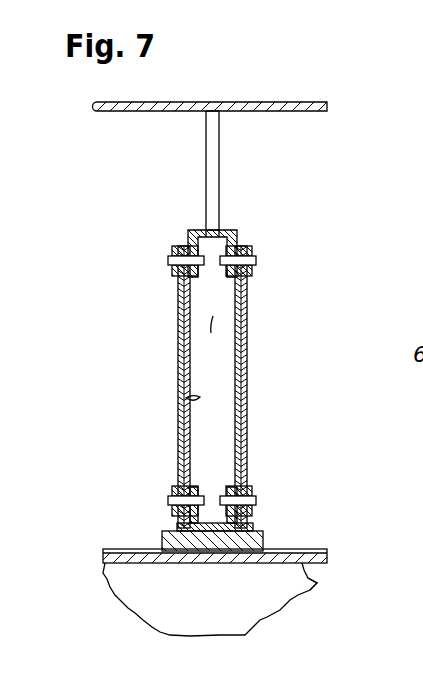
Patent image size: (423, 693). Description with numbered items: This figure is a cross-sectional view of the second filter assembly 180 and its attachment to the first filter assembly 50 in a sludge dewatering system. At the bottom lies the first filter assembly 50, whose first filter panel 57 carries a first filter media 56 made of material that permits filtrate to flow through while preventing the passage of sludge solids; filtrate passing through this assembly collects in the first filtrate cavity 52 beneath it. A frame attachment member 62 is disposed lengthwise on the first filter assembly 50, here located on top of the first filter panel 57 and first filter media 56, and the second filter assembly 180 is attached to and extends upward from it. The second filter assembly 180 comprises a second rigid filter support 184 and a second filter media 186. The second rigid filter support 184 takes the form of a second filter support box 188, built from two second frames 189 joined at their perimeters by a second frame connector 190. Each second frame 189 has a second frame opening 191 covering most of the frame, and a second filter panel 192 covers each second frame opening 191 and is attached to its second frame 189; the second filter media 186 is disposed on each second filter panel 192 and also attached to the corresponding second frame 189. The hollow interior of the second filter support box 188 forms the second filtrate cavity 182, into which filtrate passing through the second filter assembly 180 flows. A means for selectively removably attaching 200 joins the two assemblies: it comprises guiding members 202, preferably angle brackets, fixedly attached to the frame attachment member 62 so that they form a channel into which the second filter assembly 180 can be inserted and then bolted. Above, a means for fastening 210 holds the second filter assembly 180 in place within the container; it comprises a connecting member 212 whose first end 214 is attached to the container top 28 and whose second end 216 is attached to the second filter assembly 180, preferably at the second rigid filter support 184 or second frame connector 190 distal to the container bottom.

The container top 28 is at (252, 102).
The first filter assembly 50 is at (310, 528).
The first filtrate cavity 52 is at (217, 619).
The first filter media 56 is at (327, 549).
The first filter panel 57 is at (317, 583).
The frame attachment member 62 is at (162, 539).
The second filter assembly 180 is at (275, 259).
The second filtrate cavity 182 is at (208, 323).
The second rigid filter support 184 is at (260, 198).
The second filter media 186 is at (178, 355).
The second filter support box 188 is at (156, 180).
The second frame 189 is at (188, 235).
The second frame connector 190 is at (198, 229).
The second frame opening 191 is at (228, 276).
The second filter panel 192 is at (235, 384).
The means for selectively removably attaching 200 is at (270, 465).
The guiding member 202 is at (250, 526).
The means for fastening 210 is at (250, 134).
The connecting member 212 is at (219, 162).
The first end 214 is at (205, 131).
The second end 216 is at (219, 213).